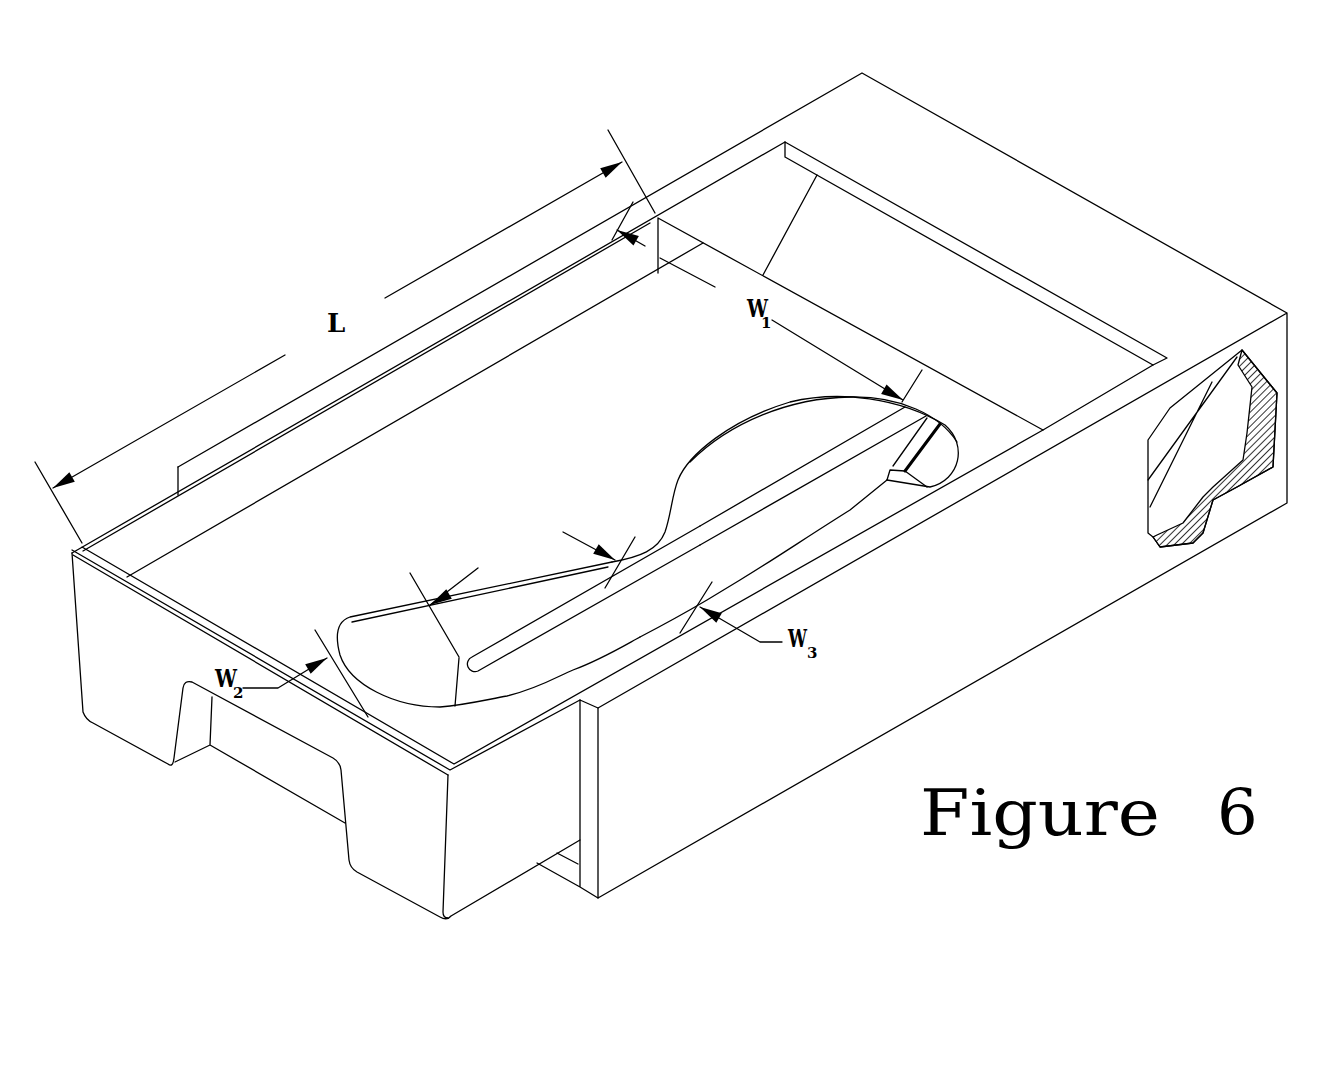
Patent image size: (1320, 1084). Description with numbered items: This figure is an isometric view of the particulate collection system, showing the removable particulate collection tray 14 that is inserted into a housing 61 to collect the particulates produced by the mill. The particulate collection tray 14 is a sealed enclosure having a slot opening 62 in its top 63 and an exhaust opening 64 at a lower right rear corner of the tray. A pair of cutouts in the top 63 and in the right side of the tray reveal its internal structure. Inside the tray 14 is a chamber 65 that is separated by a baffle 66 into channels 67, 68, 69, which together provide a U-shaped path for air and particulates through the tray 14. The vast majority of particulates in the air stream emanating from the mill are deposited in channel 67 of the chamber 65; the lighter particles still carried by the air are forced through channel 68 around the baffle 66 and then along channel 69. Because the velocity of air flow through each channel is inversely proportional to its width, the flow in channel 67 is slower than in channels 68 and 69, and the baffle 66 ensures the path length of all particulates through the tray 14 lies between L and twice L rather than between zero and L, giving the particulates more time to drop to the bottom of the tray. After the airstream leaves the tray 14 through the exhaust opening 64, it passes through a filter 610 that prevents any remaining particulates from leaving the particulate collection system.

The particulate collection tray 14 is at (160, 742).
The housing 61 is at (865, 723).
The slot opening 62 is at (243, 493).
The top 63 is at (478, 483).
The exhaust opening 64 is at (953, 466).
The chamber 65 is at (757, 463).
The baffle 66 is at (822, 460).
The channel 67 is at (510, 615).
The channel 68 is at (442, 695).
The channel 69 is at (775, 536).
The filter 610 is at (1063, 371).